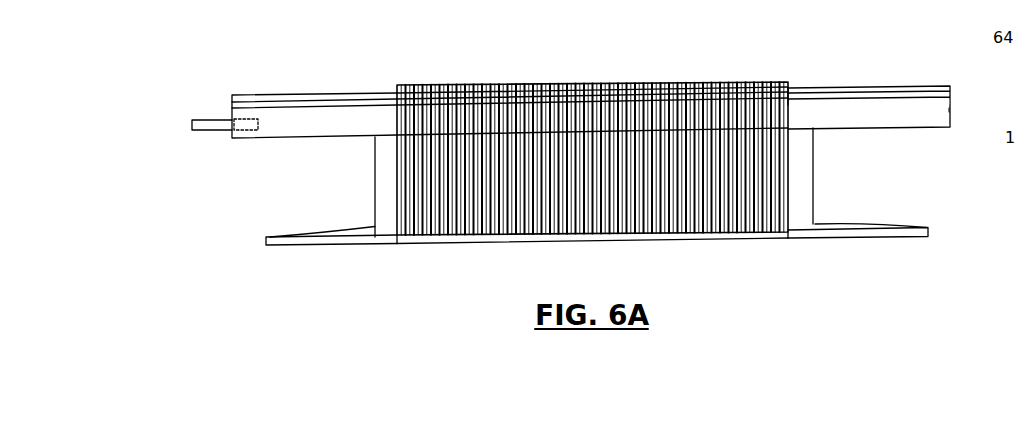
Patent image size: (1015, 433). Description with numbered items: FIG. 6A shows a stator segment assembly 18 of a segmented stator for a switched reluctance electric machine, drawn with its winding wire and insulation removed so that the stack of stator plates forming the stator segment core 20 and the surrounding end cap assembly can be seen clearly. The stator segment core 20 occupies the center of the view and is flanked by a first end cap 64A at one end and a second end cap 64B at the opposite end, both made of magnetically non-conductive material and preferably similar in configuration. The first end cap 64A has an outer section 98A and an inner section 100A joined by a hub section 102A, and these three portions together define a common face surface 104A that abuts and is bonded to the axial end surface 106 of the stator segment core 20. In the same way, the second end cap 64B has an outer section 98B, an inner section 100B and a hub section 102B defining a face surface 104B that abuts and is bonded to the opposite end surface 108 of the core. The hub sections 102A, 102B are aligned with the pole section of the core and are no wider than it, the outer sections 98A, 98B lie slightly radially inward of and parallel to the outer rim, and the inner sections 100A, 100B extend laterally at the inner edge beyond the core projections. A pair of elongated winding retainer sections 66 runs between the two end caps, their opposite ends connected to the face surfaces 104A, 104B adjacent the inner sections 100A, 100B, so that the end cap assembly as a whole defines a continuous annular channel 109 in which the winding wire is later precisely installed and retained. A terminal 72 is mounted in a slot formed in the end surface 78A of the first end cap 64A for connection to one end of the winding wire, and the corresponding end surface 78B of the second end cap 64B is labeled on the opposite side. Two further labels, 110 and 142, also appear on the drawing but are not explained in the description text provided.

The stator segment assembly 18 is at (721, 46).
The stator segment core 20 is at (589, 64).
The first end cap 64A is at (283, 90).
The second end cap 64B is at (905, 86).
The winding retainer sections 66 is at (533, 238).
The second terminal 72 is at (203, 132).
The end surface 78A is at (231, 112).
The end surface 78B is at (950, 110).
The outer section 98A is at (305, 128).
The outer section 98B is at (922, 118).
The inner section 100A is at (322, 243).
The inner section 100B is at (845, 223).
The hub section 102A is at (383, 187).
The hub section 102B is at (805, 172).
The face surface 104A is at (400, 240).
The face surface 104B is at (788, 233).
The axial end surface 106 is at (397, 138).
The end surface 108 is at (789, 105).
The continuous annular channel 109 is at (256, 216).
The lead 110 is at (982, 86).
The arm groove 142 is at (343, 93).